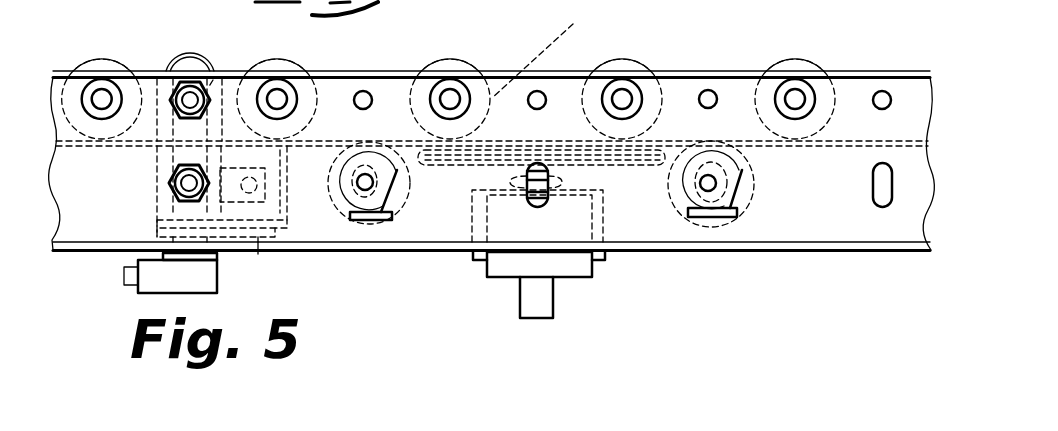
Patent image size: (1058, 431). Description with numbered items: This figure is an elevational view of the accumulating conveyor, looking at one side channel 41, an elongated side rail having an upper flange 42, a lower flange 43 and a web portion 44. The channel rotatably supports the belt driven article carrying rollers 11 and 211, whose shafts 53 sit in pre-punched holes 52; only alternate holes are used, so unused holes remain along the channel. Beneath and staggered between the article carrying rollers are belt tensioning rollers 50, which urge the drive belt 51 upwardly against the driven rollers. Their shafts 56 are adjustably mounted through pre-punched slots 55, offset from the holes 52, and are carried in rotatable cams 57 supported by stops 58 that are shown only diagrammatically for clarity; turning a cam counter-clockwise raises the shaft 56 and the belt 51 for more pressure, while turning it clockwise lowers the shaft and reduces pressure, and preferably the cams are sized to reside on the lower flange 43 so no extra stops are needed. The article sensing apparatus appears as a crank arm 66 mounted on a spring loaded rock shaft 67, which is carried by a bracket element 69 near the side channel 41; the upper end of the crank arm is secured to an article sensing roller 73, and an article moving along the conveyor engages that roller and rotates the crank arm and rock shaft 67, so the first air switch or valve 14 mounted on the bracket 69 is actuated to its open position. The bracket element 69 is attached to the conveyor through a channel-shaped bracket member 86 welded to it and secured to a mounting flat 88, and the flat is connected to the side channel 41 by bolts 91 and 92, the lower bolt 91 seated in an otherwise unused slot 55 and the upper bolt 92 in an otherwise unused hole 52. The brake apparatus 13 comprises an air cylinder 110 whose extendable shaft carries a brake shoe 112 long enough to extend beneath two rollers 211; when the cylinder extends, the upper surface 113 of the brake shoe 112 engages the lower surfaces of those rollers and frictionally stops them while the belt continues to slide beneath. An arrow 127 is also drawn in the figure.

The article carrying roller 11 is at (98, 62).
The brake apparatus 13 is at (461, 184).
The first air switch or valve 14 is at (128, 306).
The side channel 41 is at (73, 240).
The upper flange 42 is at (923, 70).
The lower flange 43 is at (921, 250).
The web portion 44 is at (925, 165).
The belt tensioning roller 50 is at (311, 256).
The drive belt 51 is at (68, 172).
The hole 52 is at (363, 92).
The shaft 53 is at (289, 106).
The slot 55 is at (193, 163).
The shaft 56 is at (357, 182).
The cam 57 is at (398, 179).
The stop 58 is at (410, 226).
The crank arm 66 is at (152, 166).
The rock shaft 67 is at (258, 254).
The bracket element 69 is at (160, 218).
The article sensing roller 73 is at (195, 97).
The bracket member 86 is at (290, 213).
The mounting flat 88 is at (158, 80).
The bolt 91 is at (186, 183).
The bolt 92 is at (213, 80).
The air cylinder 110 is at (537, 308).
The brake shoe 112 is at (622, 160).
The upper surface 113 is at (498, 152).
The direction arrow 127 is at (215, 23).
The article carrying roller 211 is at (613, 62).